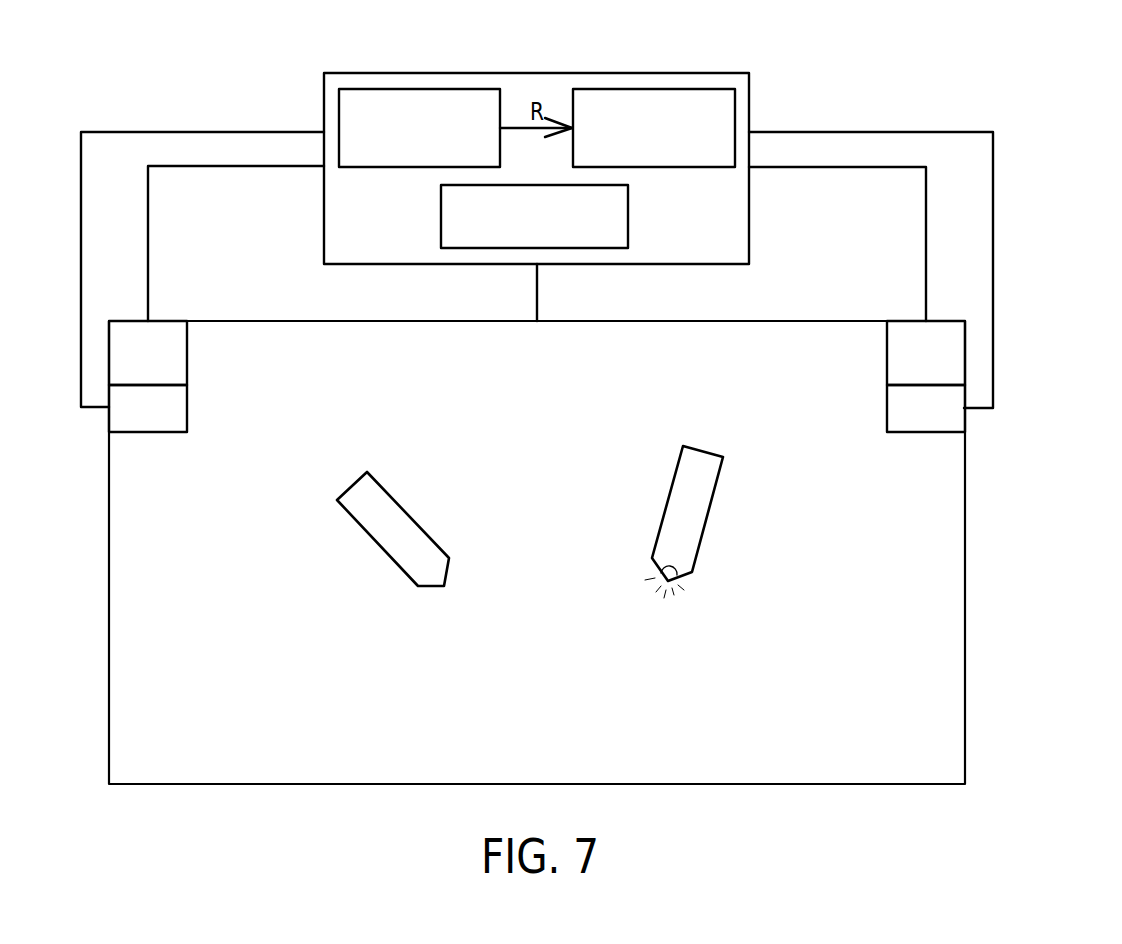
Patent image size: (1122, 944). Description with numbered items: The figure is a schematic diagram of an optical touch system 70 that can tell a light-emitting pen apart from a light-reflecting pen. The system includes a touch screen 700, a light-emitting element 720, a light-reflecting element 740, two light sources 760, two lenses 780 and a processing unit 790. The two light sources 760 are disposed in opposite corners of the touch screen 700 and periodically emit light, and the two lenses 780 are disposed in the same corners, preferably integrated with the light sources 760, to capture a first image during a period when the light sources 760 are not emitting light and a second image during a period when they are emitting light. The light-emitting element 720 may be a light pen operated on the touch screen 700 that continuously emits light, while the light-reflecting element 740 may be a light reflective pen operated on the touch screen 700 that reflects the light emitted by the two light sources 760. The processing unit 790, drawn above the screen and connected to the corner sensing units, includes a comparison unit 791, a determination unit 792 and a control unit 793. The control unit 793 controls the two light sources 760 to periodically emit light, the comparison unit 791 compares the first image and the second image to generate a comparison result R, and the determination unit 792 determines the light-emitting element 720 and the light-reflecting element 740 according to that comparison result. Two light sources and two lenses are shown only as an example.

The optical touch system 70 is at (1000, 78).
The touch screen 700 is at (966, 548).
The light-emitting element 720 is at (703, 542).
The light-reflecting element 740 is at (407, 512).
The light sources 760 is at (187, 407).
The lenses 780 is at (187, 352).
The processing unit 790 is at (749, 93).
The comparison unit 791 is at (413, 89).
The determination unit 792 is at (650, 89).
The control unit 793 is at (628, 216).